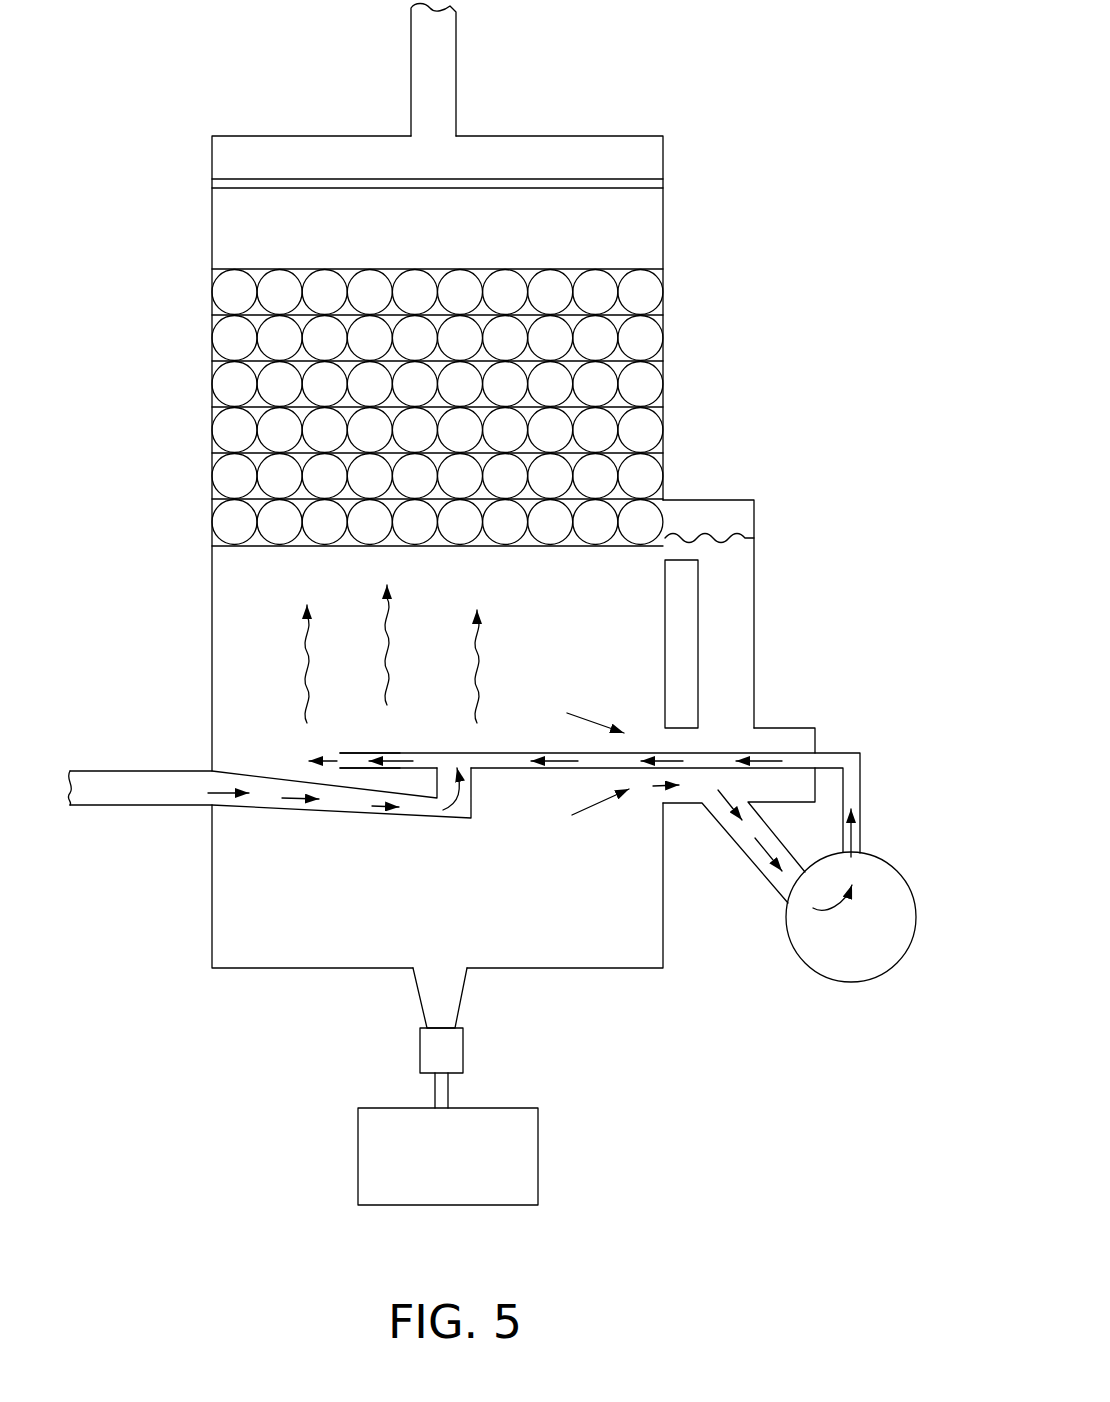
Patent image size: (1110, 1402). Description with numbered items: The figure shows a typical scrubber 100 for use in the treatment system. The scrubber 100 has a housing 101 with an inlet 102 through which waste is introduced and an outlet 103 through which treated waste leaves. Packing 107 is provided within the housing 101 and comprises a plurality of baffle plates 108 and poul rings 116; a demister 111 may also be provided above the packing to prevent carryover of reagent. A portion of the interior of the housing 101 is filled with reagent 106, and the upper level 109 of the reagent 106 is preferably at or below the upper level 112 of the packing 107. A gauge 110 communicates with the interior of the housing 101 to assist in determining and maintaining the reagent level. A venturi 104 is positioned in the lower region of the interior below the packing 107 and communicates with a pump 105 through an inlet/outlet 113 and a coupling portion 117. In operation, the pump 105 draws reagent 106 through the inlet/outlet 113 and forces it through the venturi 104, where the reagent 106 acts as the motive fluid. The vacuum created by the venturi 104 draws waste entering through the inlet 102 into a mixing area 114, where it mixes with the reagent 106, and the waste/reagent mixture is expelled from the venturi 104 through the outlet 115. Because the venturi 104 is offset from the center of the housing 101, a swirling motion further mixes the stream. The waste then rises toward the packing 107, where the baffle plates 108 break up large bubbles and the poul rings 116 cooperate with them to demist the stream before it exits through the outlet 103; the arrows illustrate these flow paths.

The scrubber 100 is at (705, 69).
The housing 101 is at (240, 968).
The inlet 102 is at (211, 805).
The outlet 103 is at (458, 135).
The venturi 104 is at (505, 769).
The pump 105 is at (837, 980).
The reagent 106 is at (242, 663).
The packing 107 is at (386, 383).
The baffle plates 108 is at (325, 452).
The upper level of reagent 109 is at (720, 540).
The gauge 110 is at (755, 620).
The demister 111 is at (296, 186).
The upper level of packing 112 is at (321, 269).
The inlet/outlet 113 is at (683, 805).
The mixing area 114 is at (473, 773).
The outlet 115 is at (340, 753).
The poul rings 116 is at (228, 300).
The coupling portion 117 is at (787, 728).